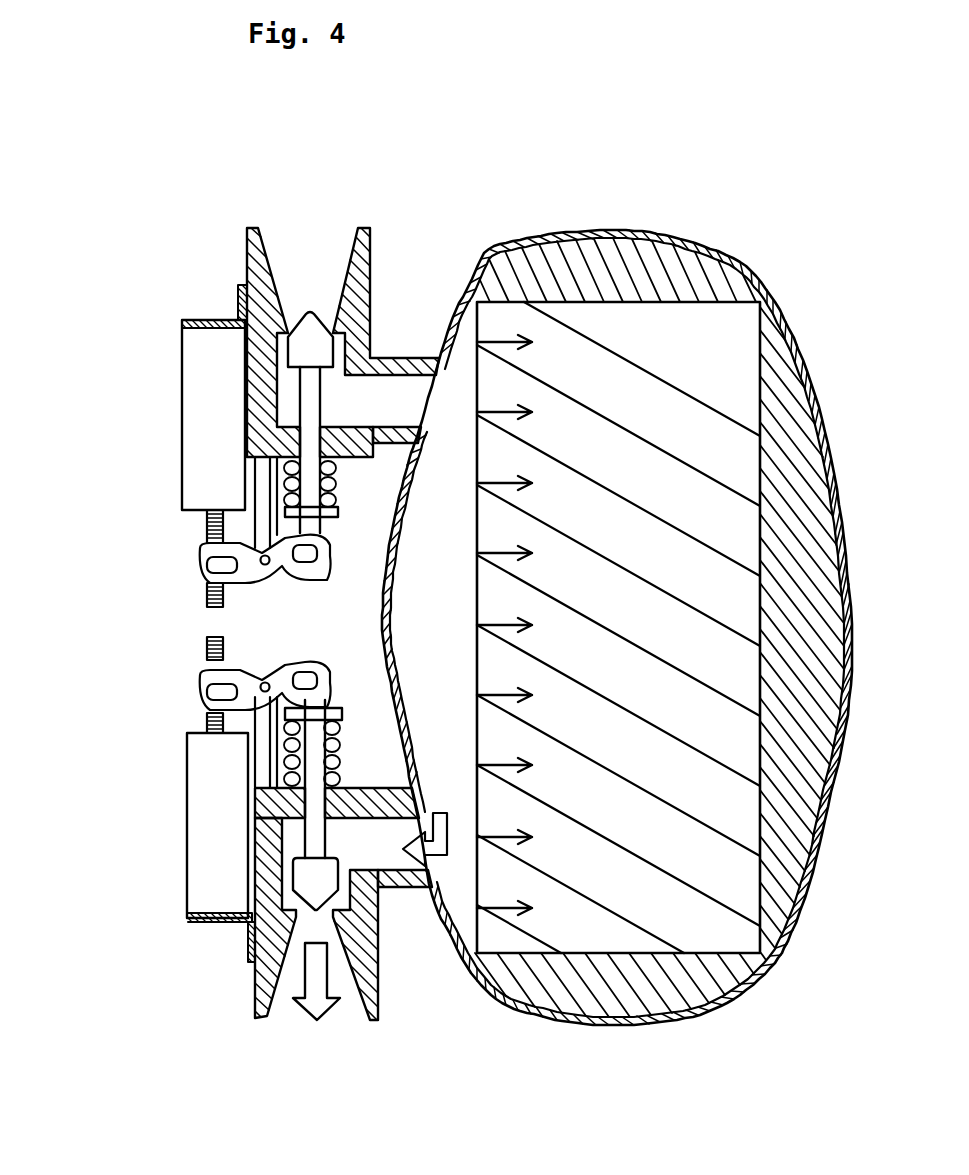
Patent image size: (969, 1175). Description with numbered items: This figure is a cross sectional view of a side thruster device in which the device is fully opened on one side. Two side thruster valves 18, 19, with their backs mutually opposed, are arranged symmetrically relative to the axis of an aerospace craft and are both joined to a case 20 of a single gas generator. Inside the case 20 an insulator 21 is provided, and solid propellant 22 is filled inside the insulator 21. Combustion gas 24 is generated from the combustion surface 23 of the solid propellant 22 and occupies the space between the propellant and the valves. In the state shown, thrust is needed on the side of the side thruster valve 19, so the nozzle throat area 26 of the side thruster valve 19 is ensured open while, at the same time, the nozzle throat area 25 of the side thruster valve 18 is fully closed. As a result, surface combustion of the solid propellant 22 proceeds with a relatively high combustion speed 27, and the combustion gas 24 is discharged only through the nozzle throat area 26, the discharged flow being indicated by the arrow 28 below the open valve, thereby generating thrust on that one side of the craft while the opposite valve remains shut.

The side thruster valve 18 is at (158, 414).
The side thruster valve 19 is at (168, 845).
The case 20 is at (803, 908).
The insulator 21 is at (705, 985).
The solid propellant 22 is at (607, 887).
The combustion surface 23 is at (478, 870).
The combustion gas 24 is at (430, 683).
The nozzle throat area 25 is at (313, 313).
The nozzle throat area 26 is at (309, 917).
The combustion speed 27 is at (508, 913).
The outflow arrow 28 is at (320, 1012).